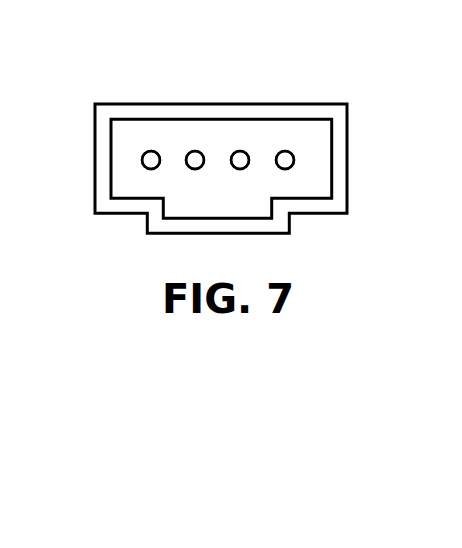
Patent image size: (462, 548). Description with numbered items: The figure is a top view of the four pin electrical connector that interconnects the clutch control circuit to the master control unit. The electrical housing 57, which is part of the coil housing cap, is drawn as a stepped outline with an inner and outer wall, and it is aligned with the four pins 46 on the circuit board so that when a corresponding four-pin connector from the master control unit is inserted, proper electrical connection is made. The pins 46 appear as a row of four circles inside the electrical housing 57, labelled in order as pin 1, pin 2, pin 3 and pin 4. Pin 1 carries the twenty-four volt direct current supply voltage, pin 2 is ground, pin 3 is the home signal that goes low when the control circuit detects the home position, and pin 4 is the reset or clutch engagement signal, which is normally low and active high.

The electrical housing 57 is at (112, 103).
The pins 46 is at (142, 158).
The pin 1 is at (151, 122).
The pin 2 is at (195, 122).
The pin 3 is at (240, 121).
The pin 4 is at (285, 121).